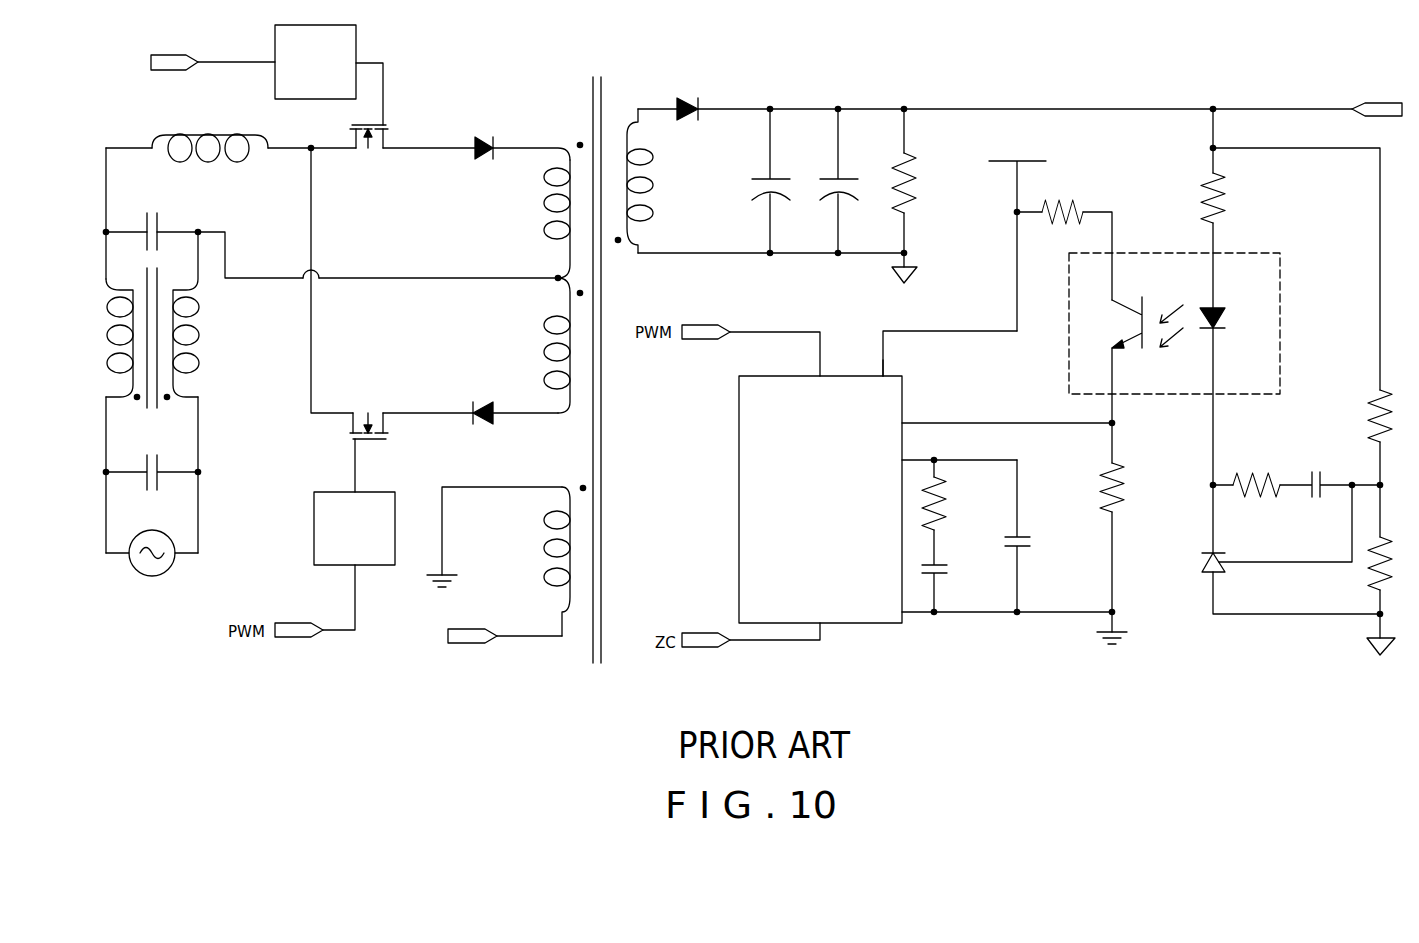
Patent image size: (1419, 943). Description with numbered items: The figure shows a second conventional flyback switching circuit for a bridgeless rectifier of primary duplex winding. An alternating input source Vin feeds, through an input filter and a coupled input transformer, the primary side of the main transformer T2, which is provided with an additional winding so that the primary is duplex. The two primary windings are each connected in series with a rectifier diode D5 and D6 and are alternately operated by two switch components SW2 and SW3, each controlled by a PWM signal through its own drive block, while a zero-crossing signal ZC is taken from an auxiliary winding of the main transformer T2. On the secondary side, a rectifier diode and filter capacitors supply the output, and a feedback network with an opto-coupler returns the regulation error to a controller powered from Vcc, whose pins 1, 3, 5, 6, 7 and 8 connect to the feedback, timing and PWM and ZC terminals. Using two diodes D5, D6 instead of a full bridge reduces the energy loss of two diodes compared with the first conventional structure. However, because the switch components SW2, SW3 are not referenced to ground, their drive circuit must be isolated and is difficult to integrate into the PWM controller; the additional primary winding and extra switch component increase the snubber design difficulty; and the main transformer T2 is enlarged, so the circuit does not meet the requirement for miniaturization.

The switch component SW2 is at (368, 149).
The switch component SW3 is at (369, 414).
The rectifier diode D5 is at (485, 136).
The rectifier diode D6 is at (485, 399).
The main transformer T2 is at (598, 357).
The AC input voltage source Vin is at (152, 566).
The supply voltage Vcc is at (1017, 237).
The PWM signal PWM is at (245, 75).
The zero-crossing signal ZC is at (492, 638).
The controller pin 1 is at (999, 423).
The controller pin 3 is at (951, 462).
The controller pin 5 is at (752, 626).
The controller pin 6 is at (999, 612).
The controller pin 7 is at (752, 361).
The controller pin 8 is at (882, 379).